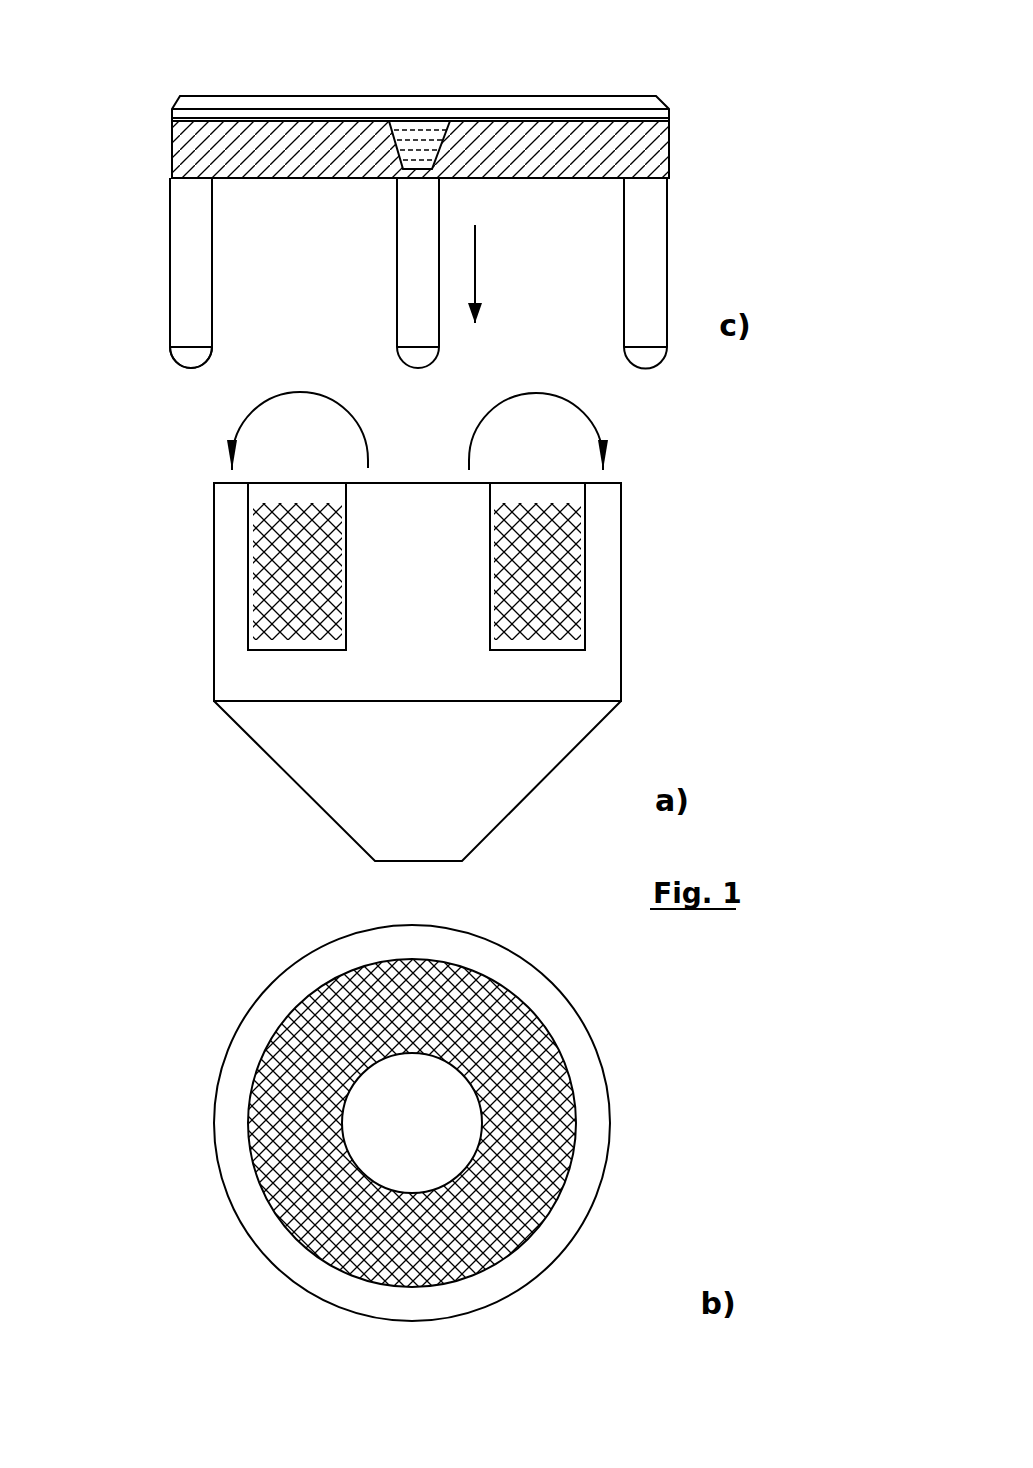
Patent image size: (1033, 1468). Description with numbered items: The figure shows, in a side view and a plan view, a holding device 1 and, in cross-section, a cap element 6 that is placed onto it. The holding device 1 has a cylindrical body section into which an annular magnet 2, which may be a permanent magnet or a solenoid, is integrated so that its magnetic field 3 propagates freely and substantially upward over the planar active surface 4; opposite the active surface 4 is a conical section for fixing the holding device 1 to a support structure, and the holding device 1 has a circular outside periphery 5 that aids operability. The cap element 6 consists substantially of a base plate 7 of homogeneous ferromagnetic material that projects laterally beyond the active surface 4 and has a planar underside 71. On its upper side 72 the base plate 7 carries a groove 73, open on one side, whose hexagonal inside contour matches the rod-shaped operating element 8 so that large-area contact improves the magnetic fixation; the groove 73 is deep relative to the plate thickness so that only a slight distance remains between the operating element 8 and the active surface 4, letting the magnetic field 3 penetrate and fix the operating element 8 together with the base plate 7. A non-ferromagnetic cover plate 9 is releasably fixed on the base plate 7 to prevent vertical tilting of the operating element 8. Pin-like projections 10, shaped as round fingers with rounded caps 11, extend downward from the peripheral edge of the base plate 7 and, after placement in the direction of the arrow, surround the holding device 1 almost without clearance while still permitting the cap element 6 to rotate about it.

In FIG. 1a, the holding device 1 is at (665, 637).
In FIG. 1a, the magnet 2 is at (553, 573).
In FIG. 1b, the magnet 2 is at (525, 1098).
In FIG. 1a, the magnetic field 3 is at (603, 428).
In FIG. 1a, the active surface 4 is at (295, 483).
In FIG. 1b, the active surface 4 is at (555, 1010).
In FIG. 1b, the circular outside periphery 5 is at (237, 1037).
In FIG. 1c, the cap element 6 is at (748, 163).
In FIG. 1c, the base plate 7 is at (642, 131).
In FIG. 1c, the underside 71 is at (537, 180).
In FIG. 1c, the upper side 72 is at (575, 117).
In FIG. 1c, the groove 73 is at (443, 128).
In FIG. 1c, the operating element 8 is at (421, 146).
In FIG. 1c, the cover plate 9 is at (367, 112).
In FIG. 1c, the pin-like projections 10 is at (180, 230).
In FIG. 1c, the rounded caps 11 is at (190, 357).